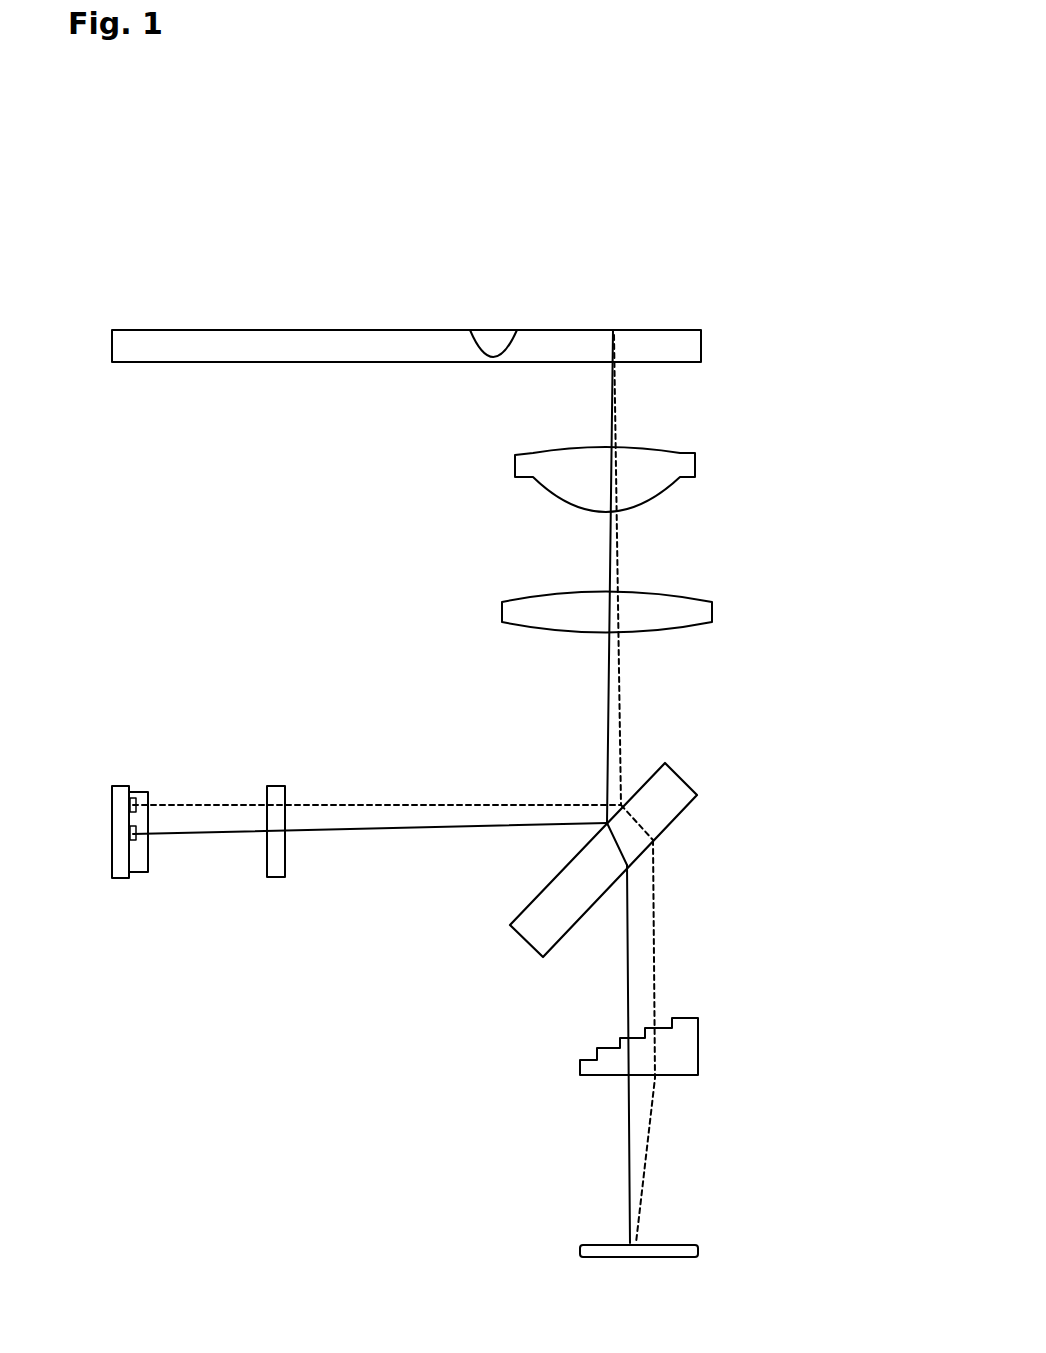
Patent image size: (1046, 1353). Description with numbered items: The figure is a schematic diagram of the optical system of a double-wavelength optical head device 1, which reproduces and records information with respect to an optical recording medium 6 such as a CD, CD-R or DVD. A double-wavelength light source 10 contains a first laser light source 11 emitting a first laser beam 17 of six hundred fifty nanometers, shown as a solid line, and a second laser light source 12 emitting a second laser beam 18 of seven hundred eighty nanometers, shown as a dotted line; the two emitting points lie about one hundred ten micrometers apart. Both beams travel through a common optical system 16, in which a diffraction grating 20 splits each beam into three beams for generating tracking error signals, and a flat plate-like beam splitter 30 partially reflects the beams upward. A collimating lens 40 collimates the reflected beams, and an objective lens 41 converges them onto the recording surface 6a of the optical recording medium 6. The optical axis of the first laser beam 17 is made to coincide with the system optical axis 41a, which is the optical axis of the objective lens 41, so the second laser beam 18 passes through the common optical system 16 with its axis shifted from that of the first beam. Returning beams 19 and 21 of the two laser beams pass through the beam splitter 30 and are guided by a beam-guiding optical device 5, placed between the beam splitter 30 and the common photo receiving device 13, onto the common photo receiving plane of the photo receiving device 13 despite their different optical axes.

The optical head device 1 is at (836, 584).
The beam-guiding optical device 5 is at (700, 1047).
The optical recording medium 6 is at (705, 346).
The recording surface 6a is at (470, 330).
The double-wavelength light source 10 is at (112, 827).
The first laser light source 11 is at (147, 850).
The second laser light source 12 is at (147, 792).
The photo receiving device 13 is at (702, 1248).
The common optical system 16 is at (598, 1140).
The first laser beam 17 is at (205, 835).
The second laser beam 18 is at (247, 805).
The returning beam 19 is at (623, 965).
The diffraction grating 20 is at (288, 877).
The returning beam 21 is at (660, 947).
The beam splitter 30 is at (680, 778).
The collimating lens 40 is at (712, 612).
The objective lens 41 is at (697, 463).
The system optical axis 41a is at (610, 543).